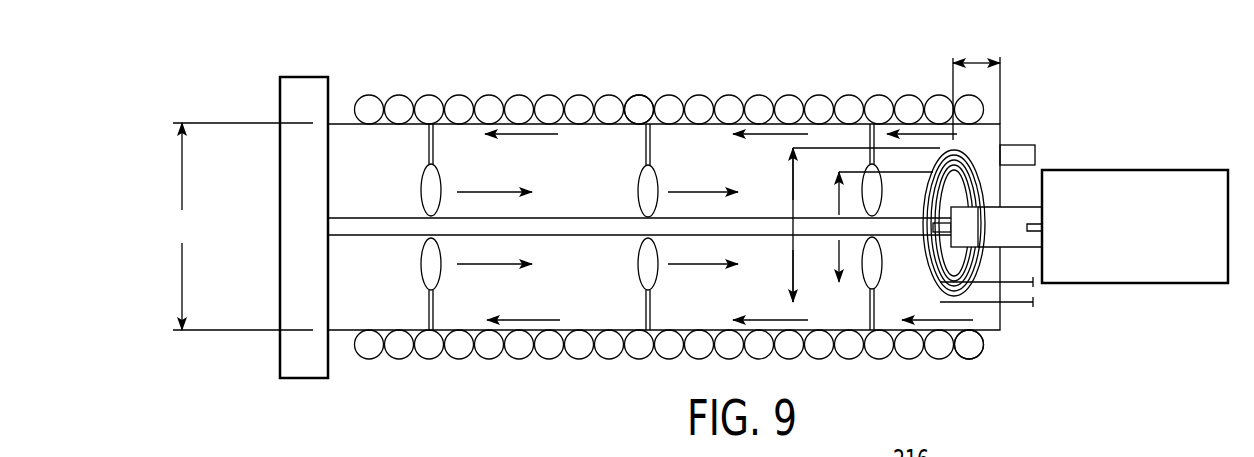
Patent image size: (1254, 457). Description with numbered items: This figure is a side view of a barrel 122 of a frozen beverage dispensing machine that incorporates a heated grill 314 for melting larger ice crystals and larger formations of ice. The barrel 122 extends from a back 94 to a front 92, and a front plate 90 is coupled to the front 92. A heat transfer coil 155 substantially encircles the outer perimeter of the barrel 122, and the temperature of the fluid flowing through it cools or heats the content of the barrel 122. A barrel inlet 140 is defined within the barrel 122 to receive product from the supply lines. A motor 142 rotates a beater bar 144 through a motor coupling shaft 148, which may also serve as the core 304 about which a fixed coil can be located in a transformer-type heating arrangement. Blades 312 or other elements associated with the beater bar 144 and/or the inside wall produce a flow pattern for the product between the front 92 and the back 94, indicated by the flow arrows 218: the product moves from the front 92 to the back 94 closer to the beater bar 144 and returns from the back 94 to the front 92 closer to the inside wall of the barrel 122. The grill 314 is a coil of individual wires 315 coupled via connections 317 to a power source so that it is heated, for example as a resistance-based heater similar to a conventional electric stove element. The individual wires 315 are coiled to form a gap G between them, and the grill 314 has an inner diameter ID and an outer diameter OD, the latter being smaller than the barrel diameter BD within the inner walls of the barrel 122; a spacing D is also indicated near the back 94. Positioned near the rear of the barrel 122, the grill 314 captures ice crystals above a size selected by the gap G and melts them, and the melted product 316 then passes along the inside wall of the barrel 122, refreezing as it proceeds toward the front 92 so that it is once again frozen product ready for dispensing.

The front plate 90 is at (285, 97).
The front 92 is at (340, 348).
The back 94 is at (1019, 112).
The barrel 122 is at (337, 106).
The barrel inlet 140 is at (1021, 150).
The motor 142 is at (1180, 170).
The beater bar 144 is at (907, 212).
The motor coupling shaft 148 is at (1022, 200).
The core 304 is at (1010, 227).
The heat transfer coil 155 is at (637, 105).
The flow direction arrows 218 is at (528, 318).
The blades 312 is at (447, 160).
The heated grill 314 is at (979, 291).
The individual wires 315 is at (950, 300).
The melted product 316 is at (961, 330).
The connections 317 is at (1015, 274).
The gap G is at (985, 293).
The distance D is at (974, 60).
The outer diameter OD is at (786, 228).
The inner diameter ID is at (832, 228).
The barrel diameter BD is at (240, 226).